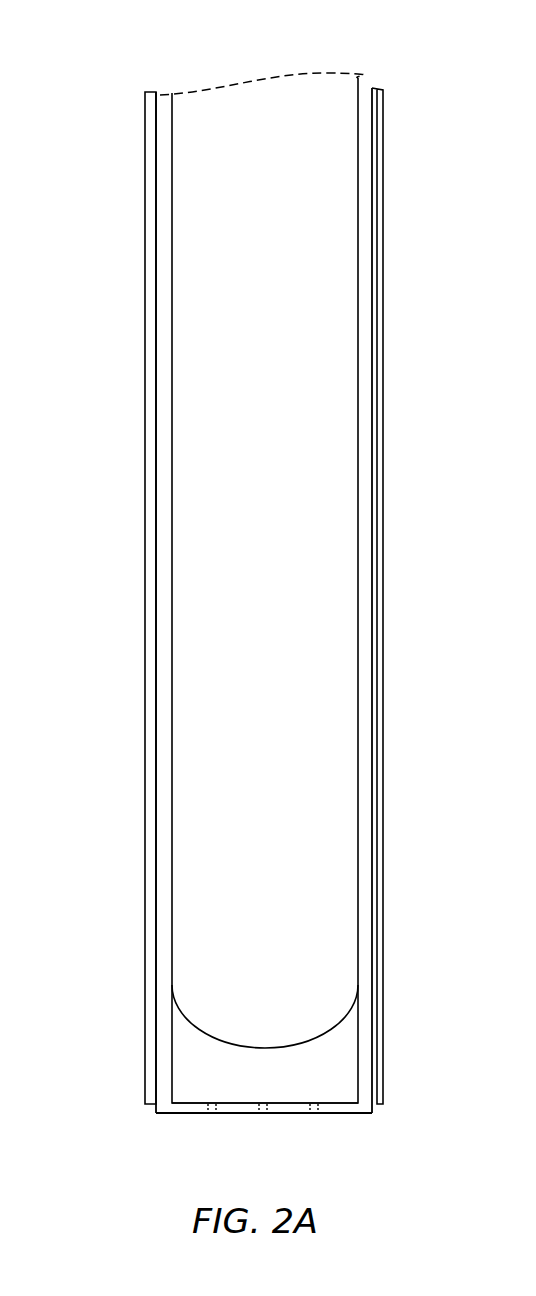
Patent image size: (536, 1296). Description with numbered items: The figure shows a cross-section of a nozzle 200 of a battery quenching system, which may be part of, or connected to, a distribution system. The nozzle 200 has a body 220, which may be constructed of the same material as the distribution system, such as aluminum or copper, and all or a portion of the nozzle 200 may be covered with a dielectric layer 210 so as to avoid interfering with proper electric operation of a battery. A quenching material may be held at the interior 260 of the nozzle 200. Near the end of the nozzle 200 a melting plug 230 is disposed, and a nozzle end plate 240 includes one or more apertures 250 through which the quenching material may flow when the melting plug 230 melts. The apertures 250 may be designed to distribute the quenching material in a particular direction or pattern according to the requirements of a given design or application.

The nozzle 200 is at (160, 63).
The dielectric layer 210 is at (150, 363).
The body 220 is at (162, 718).
The melting plug 230 is at (235, 1072).
The nozzle end plate 240 is at (338, 1111).
The apertures 250 is at (313, 1113).
The interior 260 is at (268, 237).